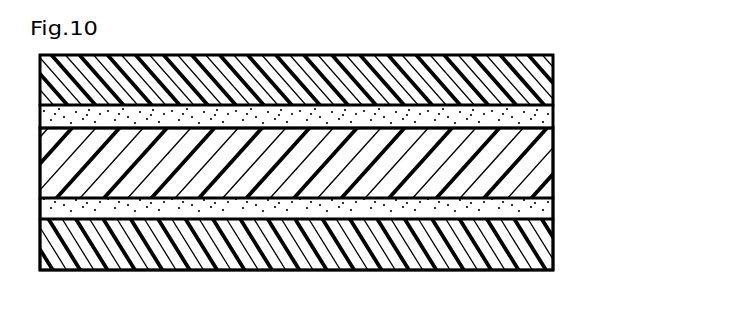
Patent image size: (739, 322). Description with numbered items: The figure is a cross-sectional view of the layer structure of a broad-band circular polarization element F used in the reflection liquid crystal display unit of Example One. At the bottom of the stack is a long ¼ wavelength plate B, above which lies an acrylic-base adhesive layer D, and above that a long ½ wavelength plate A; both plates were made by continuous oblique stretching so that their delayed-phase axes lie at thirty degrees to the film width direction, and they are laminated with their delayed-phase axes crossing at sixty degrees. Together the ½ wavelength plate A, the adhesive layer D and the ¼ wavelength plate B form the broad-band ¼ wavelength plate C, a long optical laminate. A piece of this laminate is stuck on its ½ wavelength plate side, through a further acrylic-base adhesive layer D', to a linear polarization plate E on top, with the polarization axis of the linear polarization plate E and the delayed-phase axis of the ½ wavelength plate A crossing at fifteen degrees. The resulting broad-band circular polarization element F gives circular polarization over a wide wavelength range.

The linear polarization plate E is at (540, 80).
The acrylic-base adhesive layer D' is at (328, 118).
The ½ wavelength plate A is at (538, 164).
The acrylic-base adhesive layer D is at (325, 210).
The ¼ wavelength plate B is at (538, 243).
The broad-band ¼ wavelength plate C is at (617, 152).
The broad-band circular polarization element F is at (665, 70).